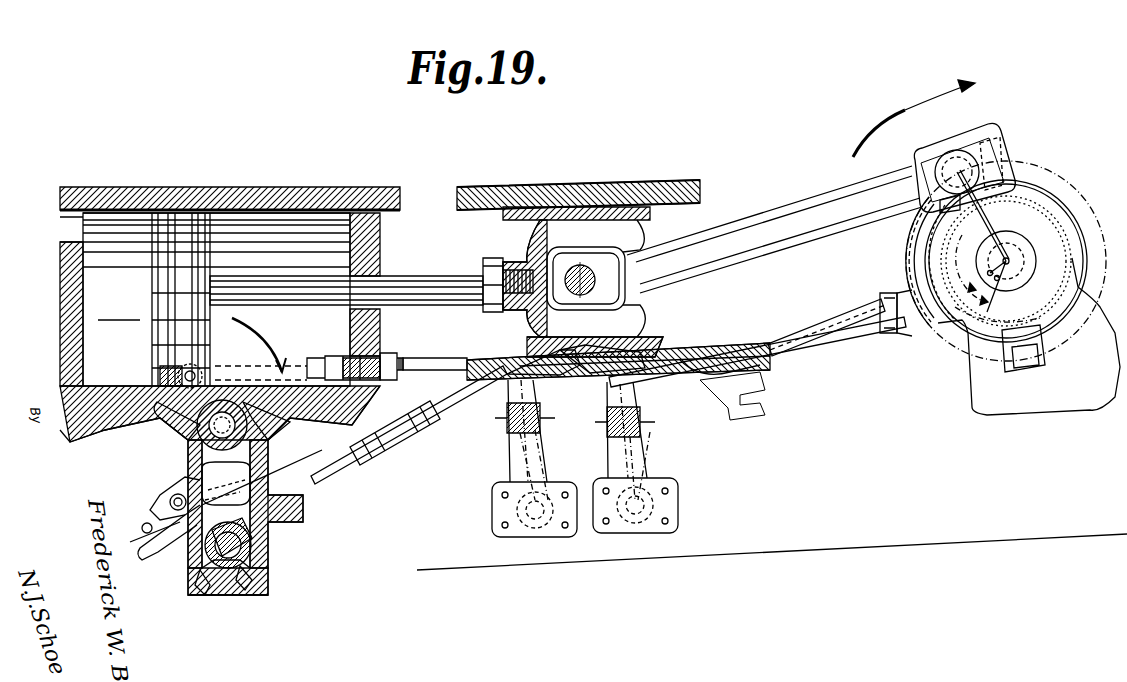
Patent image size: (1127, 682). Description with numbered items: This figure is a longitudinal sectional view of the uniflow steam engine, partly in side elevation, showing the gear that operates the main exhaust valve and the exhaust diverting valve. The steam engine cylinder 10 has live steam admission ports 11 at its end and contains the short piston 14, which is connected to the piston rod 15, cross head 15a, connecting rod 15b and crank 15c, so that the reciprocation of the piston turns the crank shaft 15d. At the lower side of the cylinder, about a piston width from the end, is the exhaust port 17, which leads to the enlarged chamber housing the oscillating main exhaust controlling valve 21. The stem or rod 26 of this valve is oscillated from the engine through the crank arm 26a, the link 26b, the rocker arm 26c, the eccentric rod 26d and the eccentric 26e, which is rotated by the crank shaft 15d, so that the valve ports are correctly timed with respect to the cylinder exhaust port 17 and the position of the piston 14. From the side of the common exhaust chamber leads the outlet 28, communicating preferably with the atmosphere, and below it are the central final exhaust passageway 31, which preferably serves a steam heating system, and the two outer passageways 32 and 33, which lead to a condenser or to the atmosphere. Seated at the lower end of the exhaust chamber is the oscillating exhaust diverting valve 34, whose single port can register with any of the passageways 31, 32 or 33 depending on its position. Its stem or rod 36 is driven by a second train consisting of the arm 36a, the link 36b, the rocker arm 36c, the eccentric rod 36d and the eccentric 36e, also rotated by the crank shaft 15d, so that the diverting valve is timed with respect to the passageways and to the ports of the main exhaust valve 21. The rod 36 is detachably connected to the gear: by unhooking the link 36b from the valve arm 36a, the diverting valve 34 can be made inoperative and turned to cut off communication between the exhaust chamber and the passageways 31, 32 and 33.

The steam engine cylinder 10 is at (142, 197).
The live steam admission ports 11 is at (78, 233).
The piston 14 is at (168, 282).
The piston rod 15 is at (301, 280).
The cross head 15a is at (563, 228).
The connecting rod 15b is at (796, 200).
The crank 15c is at (975, 150).
The crank shaft 15d is at (1006, 261).
The exhaust port 17 is at (137, 423).
The main exhaust controlling valve 21 is at (257, 432).
The stem or rod 26 is at (187, 453).
The crank arm 26a is at (172, 375).
The link 26b is at (300, 363).
The rocker arm 26c is at (510, 458).
The eccentric rod 26d is at (783, 327).
The eccentric 26e is at (937, 253).
The outlet 28 is at (226, 483).
The central final exhaust port or passageway 31 is at (230, 588).
The outer final exhaust port or passageway 32 is at (207, 582).
The outer final exhaust port or passageway 33 is at (247, 568).
The exhaust diverting valve 34 is at (203, 548).
The stem or rod 36 is at (262, 542).
The arm 36a is at (185, 535).
The link 36b is at (340, 458).
The rocker arm 36c is at (615, 458).
The eccentric rod 36d is at (800, 357).
The eccentric 36e is at (907, 274).